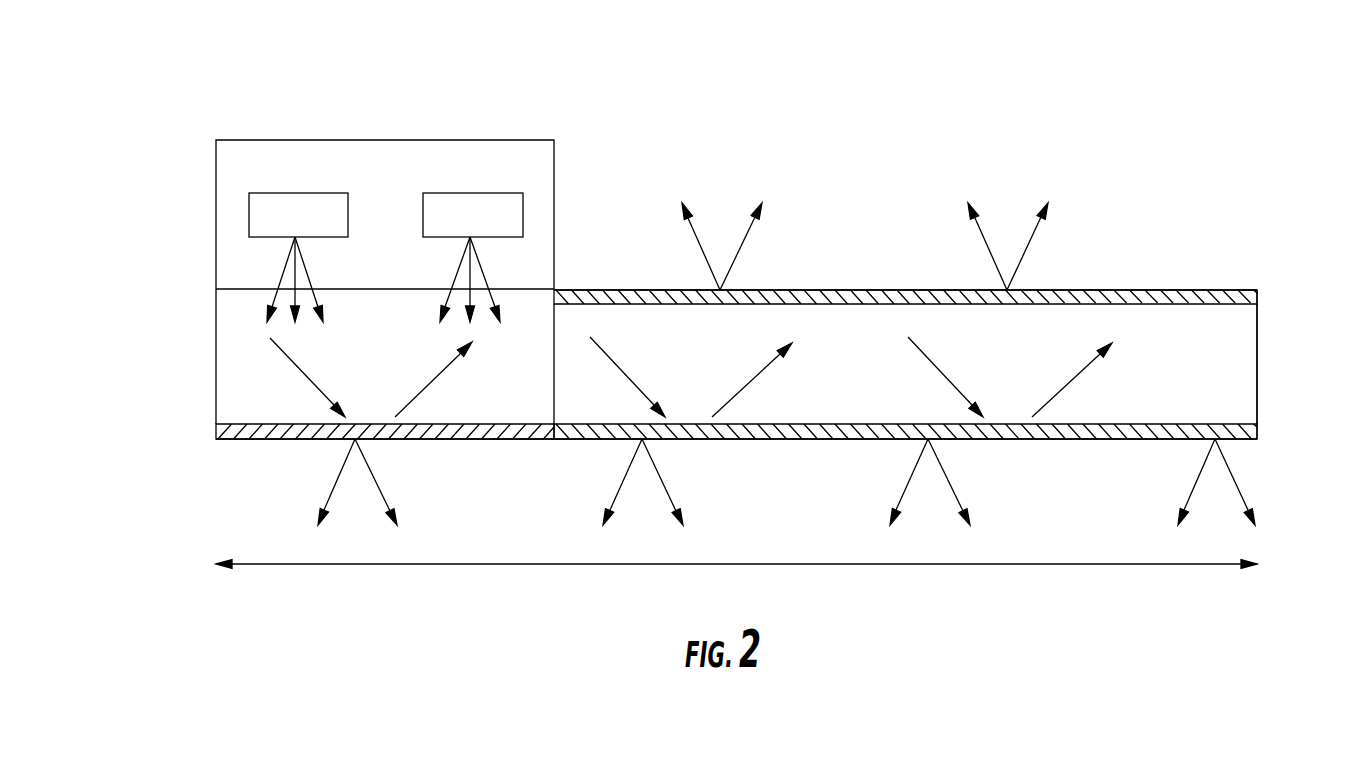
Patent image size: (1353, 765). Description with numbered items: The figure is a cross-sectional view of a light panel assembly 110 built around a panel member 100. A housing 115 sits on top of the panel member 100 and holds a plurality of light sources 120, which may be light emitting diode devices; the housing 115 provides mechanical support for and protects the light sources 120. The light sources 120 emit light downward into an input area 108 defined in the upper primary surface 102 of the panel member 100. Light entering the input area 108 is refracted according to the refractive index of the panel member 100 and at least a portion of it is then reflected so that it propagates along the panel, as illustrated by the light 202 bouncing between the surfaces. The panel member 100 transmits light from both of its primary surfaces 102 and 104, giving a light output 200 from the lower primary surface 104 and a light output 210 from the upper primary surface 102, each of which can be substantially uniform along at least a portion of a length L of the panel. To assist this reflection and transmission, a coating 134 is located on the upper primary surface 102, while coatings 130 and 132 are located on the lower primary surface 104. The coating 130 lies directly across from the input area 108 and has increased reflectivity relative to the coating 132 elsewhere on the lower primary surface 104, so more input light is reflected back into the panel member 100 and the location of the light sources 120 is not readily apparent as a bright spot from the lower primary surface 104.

The panel member 100 is at (1243, 338).
The primary surface 102 is at (787, 290).
The primary surface 104 is at (772, 439).
The input area 108 is at (395, 312).
The light panel assembly 110 is at (1107, 83).
The housing 115 is at (358, 140).
The light sources 120 is at (249, 208).
The coating 130 is at (216, 432).
The coating 132 is at (1260, 432).
The coating 134 is at (1130, 298).
The light output 200 is at (562, 498).
The light 202 is at (298, 367).
The light output 210 is at (863, 110).
The length L is at (793, 564).